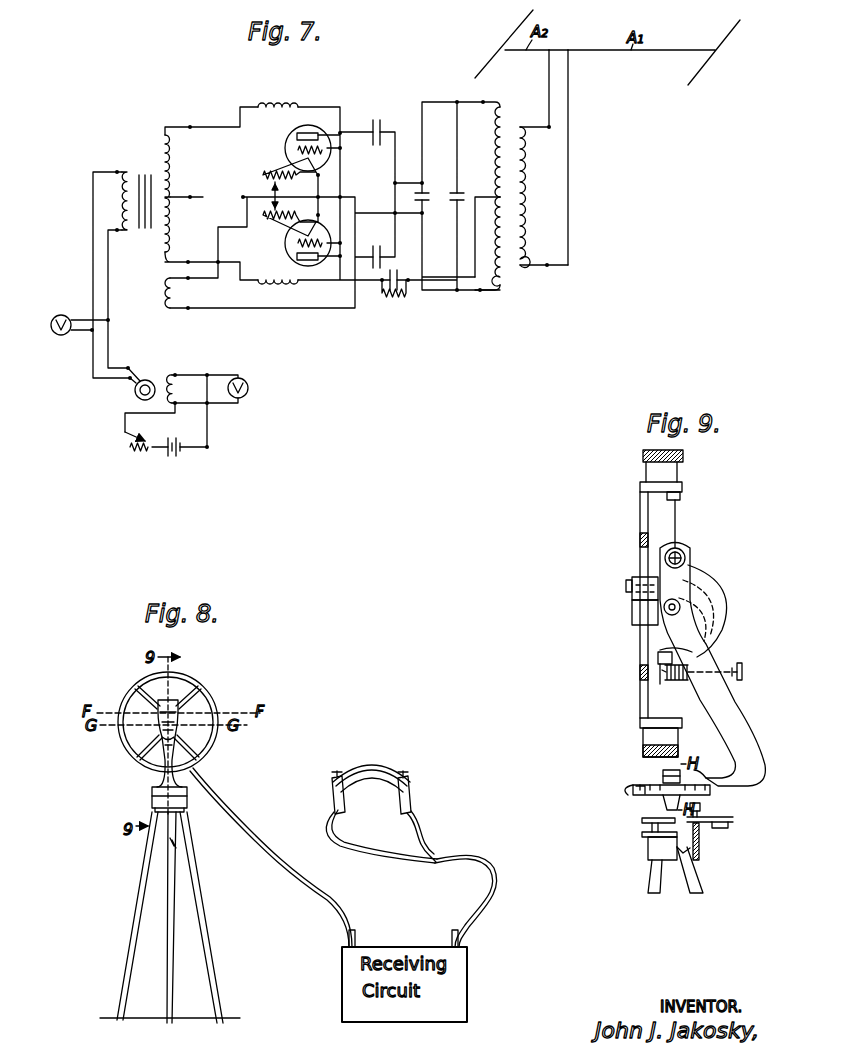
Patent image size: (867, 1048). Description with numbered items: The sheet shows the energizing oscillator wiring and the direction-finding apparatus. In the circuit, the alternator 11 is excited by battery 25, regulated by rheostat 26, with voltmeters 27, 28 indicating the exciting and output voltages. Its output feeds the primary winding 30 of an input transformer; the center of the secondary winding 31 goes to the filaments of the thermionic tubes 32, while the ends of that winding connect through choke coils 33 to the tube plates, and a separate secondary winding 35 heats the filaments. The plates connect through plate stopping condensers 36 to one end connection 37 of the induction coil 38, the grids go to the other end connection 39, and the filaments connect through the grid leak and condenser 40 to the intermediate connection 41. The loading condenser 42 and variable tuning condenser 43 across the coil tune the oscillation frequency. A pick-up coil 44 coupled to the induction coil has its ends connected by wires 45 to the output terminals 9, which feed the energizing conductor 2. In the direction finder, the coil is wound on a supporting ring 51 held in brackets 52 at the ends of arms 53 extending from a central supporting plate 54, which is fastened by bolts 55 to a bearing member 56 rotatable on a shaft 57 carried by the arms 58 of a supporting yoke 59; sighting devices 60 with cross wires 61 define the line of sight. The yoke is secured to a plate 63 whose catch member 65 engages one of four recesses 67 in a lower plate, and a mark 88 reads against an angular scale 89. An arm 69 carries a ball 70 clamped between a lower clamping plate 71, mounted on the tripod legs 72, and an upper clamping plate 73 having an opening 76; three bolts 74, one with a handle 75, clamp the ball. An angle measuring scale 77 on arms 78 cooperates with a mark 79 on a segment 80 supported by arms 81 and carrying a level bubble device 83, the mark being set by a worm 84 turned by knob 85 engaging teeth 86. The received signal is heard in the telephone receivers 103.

In FIG. 7, the electrode 2 is at (519, 27).
In FIG. 7, the output terminals 9 is at (552, 50).
In FIG. 7, the alternator 11 is at (154, 381).
In FIG. 7, the battery 25 is at (177, 457).
In FIG. 7, the rheostat 26 is at (136, 457).
In FIG. 7, the voltmeter 27 is at (249, 388).
In FIG. 7, the voltmeter 28 is at (61, 337).
In FIG. 7, the primary winding 30 is at (122, 191).
In FIG. 7, the secondary winding 31 is at (172, 172).
In FIG. 7, the thermionic tubes 32 is at (284, 153).
In FIG. 7, the choke coils 33 is at (277, 103).
In FIG. 7, the secondary winding 35 is at (160, 294).
In FIG. 7, the plate stopping condensers 36 is at (377, 120).
In FIG. 7, the end connection 37 is at (483, 104).
In FIG. 7, the induction coil 38 is at (493, 265).
In FIG. 7, the end connection 39 is at (480, 293).
In FIG. 7, the grid leak and condenser 40 is at (410, 295).
In FIG. 7, the intermediate connection 41 is at (479, 192).
In FIG. 7, the loading condenser 42 is at (451, 203).
In FIG. 7, the variable tuning condenser 43 is at (436, 186).
In FIG. 7, the pick-up coil 44 is at (530, 185).
In FIG. 7, the wires 45 is at (549, 103).
In FIG. 8, the supporting ring 51 is at (194, 689).
In FIG. 9, the supporting ring 51 is at (650, 465).
In FIG. 9, the brackets 52 is at (680, 497).
In FIG. 8, the arms 53 is at (157, 707).
In FIG. 9, the arms 53 is at (640, 523).
In FIG. 9, the central supporting plate 54 is at (633, 597).
In FIG. 9, the bolts 55 is at (633, 628).
In FIG. 8, the bearing member 56 is at (150, 738).
In FIG. 9, the bearing member 56 is at (653, 607).
In FIG. 9, the shaft 57 is at (706, 588).
In FIG. 8, the arms 58 is at (160, 736).
In FIG. 9, the arms 58 is at (712, 600).
In FIG. 8, the supporting yoke 59 is at (192, 747).
In FIG. 9, the supporting yoke 59 is at (733, 718).
In FIG. 8, the sighting devices 60 is at (156, 715).
In FIG. 9, the sighting devices 60 is at (682, 552).
In FIG. 9, the cross wires 61 is at (686, 556).
In FIG. 9, the ring or plate 63 is at (645, 786).
In FIG. 9, the catch member 65 is at (640, 791).
In FIG. 9, the recesses 67 is at (712, 790).
In FIG. 9, the arm 69 is at (660, 833).
In FIG. 9, the ball 70 is at (655, 855).
In FIG. 9, the lower clamping plate 71 is at (700, 841).
In FIG. 8, the tripod legs 72 is at (143, 893).
In FIG. 9, the tripod legs 72 is at (695, 888).
In FIG. 9, the upper clamping plate 73 is at (722, 824).
In FIG. 9, the bolts 74 is at (701, 815).
In FIG. 9, the handle 75 is at (733, 818).
In FIG. 9, the opening 76 is at (690, 856).
In FIG. 9, the angle measuring scale 77 is at (723, 630).
In FIG. 9, the arms 78 is at (698, 570).
In FIG. 9, the mark 79 is at (692, 660).
In FIG. 9, the segment 80 is at (660, 668).
In FIG. 9, the arms 81 is at (726, 610).
In FIG. 9, the level bubble device 83 is at (658, 657).
In FIG. 9, the worm 84 is at (682, 681).
In FIG. 9, the knob 85 is at (743, 673).
In FIG. 9, the teeth 86 is at (662, 681).
In FIG. 9, the mark 88 is at (728, 775).
In FIG. 9, the angular scale 89 is at (656, 782).
In FIG. 8, the telephone receivers 103 is at (372, 765).